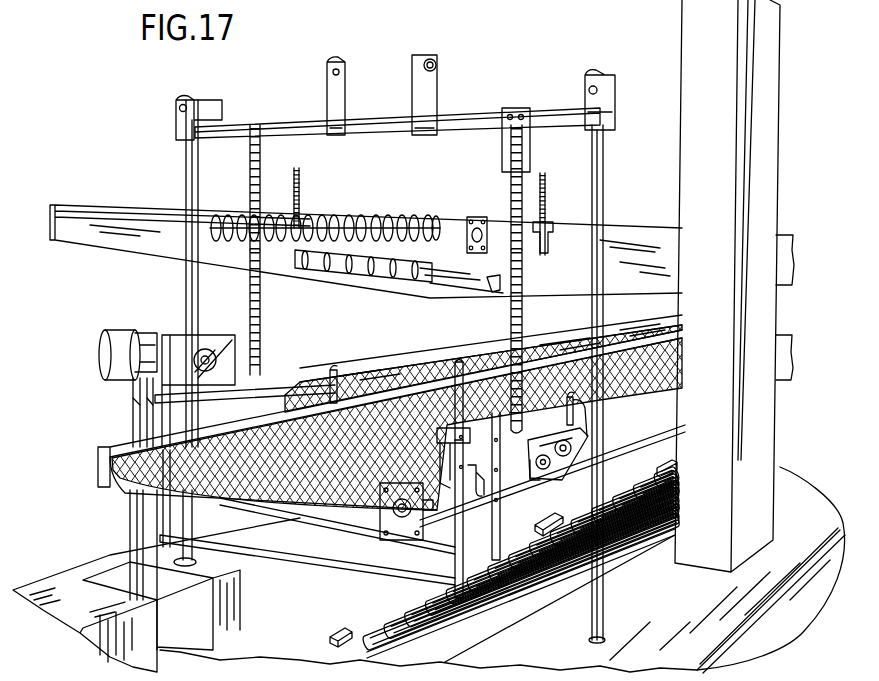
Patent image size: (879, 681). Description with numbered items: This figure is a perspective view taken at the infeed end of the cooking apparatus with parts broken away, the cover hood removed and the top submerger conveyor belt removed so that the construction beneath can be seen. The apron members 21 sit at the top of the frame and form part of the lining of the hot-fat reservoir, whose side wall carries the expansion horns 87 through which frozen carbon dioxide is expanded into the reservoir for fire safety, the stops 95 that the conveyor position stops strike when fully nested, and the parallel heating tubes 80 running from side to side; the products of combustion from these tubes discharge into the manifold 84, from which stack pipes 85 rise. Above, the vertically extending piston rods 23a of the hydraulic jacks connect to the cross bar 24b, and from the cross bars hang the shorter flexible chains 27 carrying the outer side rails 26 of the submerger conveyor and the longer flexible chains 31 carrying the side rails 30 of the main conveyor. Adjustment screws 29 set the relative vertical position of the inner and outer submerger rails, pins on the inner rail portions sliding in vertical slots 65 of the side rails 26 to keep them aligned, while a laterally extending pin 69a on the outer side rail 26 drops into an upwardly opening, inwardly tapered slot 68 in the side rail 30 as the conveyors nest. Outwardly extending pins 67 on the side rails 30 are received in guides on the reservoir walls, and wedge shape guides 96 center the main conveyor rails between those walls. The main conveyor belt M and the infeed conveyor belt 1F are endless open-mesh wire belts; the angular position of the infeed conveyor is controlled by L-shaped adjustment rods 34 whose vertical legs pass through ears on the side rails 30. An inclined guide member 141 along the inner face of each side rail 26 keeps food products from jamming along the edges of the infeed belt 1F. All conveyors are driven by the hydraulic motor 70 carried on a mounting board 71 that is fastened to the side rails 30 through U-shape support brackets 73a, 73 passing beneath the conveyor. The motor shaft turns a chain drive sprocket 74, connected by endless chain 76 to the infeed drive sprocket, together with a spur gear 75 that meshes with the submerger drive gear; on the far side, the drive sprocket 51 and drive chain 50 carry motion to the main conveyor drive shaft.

The infeed conveyor belt 1F is at (272, 420).
The apron members 21 is at (78, 609).
The piston rods 23a is at (612, 158).
The cross bar 24b is at (460, 118).
The outer side rails 26 is at (72, 205).
The shorter flexible chains 27 is at (262, 165).
The adjustment screws 29 is at (300, 186).
The side rails 30 is at (430, 362).
The longer flexible chains 31 is at (260, 300).
The L-shaped adjustment rods 34 is at (456, 370).
The drive chain 50 is at (558, 443).
The drive sprocket 51 is at (540, 486).
The vertical slots 65 is at (548, 236).
The pins 67 is at (478, 503).
The slots 68 is at (335, 372).
The pin 69a is at (518, 282).
The motor 70 is at (100, 358).
The mounting board 71 is at (218, 350).
The U-shape support bracket 73 is at (497, 506).
The U-shape support bracket 73a is at (450, 563).
The chain drive sprocket 74 is at (182, 345).
The spur gear 75 is at (208, 348).
The endless chain 76 is at (188, 380).
The tubes 80 is at (430, 615).
The manifold 84 is at (800, 478).
The stack pipes 85 is at (770, 400).
The expansion horns 87 is at (345, 578).
The stops 95 is at (330, 633).
The wedge shape guides 96 is at (590, 436).
The inclined guide member 141 is at (112, 225).
The main conveyor belt M is at (393, 385).